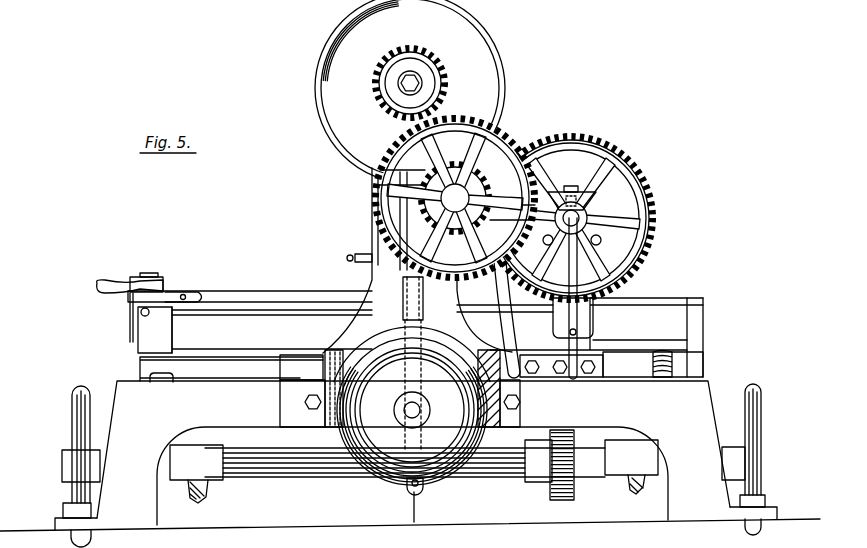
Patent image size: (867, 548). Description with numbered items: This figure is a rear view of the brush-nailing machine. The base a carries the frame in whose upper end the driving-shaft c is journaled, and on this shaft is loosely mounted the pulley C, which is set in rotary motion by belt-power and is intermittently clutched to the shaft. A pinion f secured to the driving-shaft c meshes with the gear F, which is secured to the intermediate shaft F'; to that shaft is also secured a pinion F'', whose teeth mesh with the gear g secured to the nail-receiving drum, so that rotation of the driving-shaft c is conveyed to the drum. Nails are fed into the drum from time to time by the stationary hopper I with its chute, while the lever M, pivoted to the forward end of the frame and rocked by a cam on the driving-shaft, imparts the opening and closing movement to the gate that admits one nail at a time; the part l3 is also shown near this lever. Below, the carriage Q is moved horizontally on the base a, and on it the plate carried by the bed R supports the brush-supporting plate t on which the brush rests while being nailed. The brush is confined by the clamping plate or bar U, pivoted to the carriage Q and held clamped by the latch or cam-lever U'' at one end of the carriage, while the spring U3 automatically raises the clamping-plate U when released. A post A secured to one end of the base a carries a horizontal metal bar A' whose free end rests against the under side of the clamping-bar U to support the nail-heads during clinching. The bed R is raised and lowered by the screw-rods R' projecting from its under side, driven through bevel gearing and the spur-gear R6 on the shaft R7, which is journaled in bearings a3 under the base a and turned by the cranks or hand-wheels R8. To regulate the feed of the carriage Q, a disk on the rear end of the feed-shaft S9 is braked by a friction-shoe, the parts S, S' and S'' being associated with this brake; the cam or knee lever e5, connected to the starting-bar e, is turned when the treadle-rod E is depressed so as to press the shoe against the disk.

The pulley C is at (410, 91).
The pinion f is at (442, 78).
The driving-shaft c is at (410, 83).
The gear F is at (455, 191).
The intermediate shaft F' is at (455, 198).
The pinion F'' is at (463, 190).
The gear g is at (585, 146).
The stationary hopper I is at (600, 190).
The lever M is at (370, 238).
The pin l3 is at (348, 261).
The latch or cam-lever U'' is at (134, 303).
The spring U3 is at (205, 292).
The clamping plate or bar U is at (250, 286).
The bed R is at (272, 330).
The brush-supporting plate t is at (262, 316).
The horizontal metal bar A' is at (580, 308).
The post A is at (707, 337).
The screw-rods R' is at (417, 359).
The cranks or hand-wheels R8 is at (770, 395).
The carriage Q is at (421, 366).
The base a is at (410, 456).
The drum ring S' is at (412, 377).
The drum S is at (412, 416).
The bearing block S'' is at (419, 403).
The feed-shaft S9 is at (421, 414).
The cam or knee lever e5 is at (424, 304).
The shaft R7 is at (280, 466).
The bearings a3 is at (414, 471).
The starting-bar e is at (425, 484).
The treadle-rod E is at (418, 512).
The spur-gear R6 is at (566, 498).